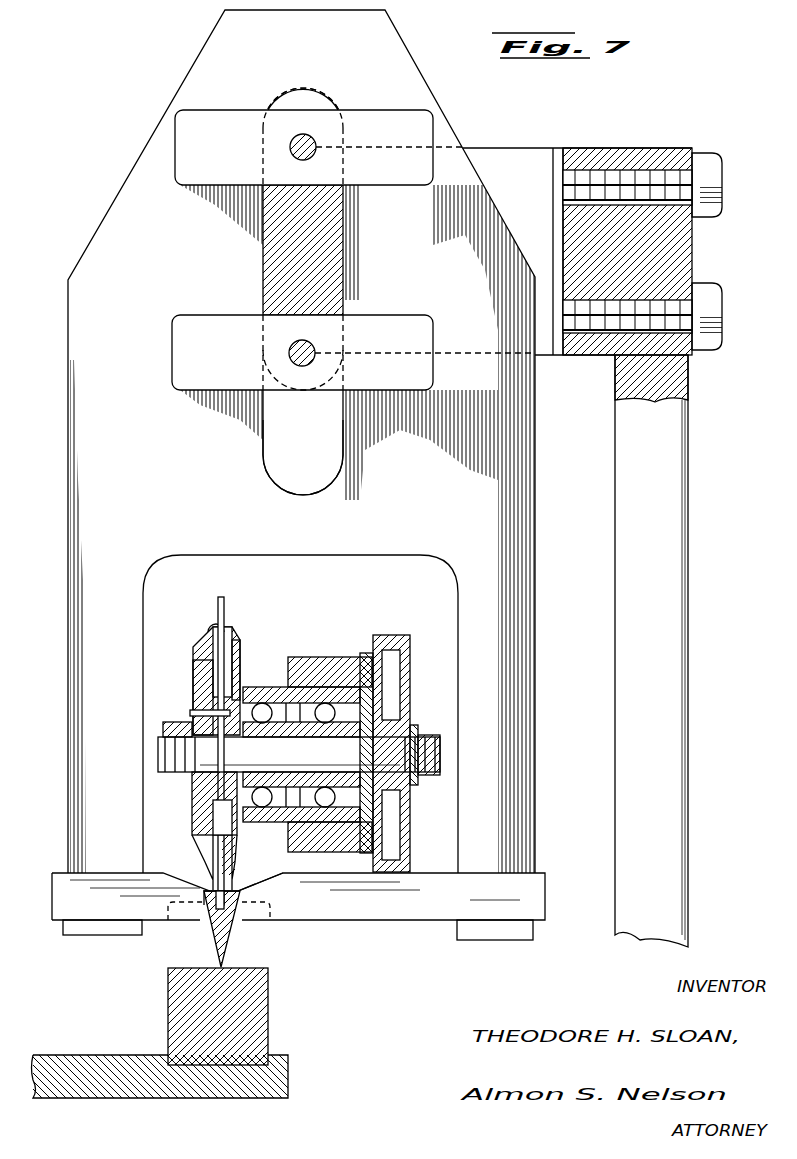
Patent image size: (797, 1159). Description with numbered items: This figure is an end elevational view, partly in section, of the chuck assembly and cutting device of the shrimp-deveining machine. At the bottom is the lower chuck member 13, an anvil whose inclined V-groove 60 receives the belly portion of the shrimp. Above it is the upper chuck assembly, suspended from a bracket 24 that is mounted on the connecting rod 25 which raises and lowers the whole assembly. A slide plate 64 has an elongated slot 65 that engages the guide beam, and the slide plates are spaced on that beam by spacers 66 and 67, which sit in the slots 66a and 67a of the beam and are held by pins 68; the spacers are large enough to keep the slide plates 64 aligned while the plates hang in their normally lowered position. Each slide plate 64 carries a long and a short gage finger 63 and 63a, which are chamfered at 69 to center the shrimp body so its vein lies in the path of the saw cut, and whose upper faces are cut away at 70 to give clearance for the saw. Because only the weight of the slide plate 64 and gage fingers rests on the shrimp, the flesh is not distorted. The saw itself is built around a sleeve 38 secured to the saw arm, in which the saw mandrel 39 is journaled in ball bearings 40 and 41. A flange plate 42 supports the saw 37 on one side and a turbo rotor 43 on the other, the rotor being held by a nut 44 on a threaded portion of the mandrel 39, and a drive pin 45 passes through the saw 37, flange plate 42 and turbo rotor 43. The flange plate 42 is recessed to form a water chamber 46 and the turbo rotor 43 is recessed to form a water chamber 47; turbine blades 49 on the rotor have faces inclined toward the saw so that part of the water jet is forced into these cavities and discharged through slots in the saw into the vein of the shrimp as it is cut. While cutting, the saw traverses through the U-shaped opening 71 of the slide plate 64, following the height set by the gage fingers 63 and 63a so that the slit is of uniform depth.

The lower chuck member 13 is at (268, 1005).
The bracket 24 is at (556, 148).
The connecting rod 25 is at (686, 474).
The saw 37 is at (226, 600).
The sleeve 38 is at (255, 690).
The saw mandrel 39 is at (299, 754).
The ball bearing 40 is at (268, 822).
The ball bearing 41 is at (305, 832).
The flange plate 42 is at (240, 660).
The turbo rotor 43 is at (195, 674).
The nut 44 is at (170, 724).
The drive pin 45 is at (192, 712).
The water chamber 46 is at (234, 642).
The water chamber 47 is at (210, 632).
The turbine blades 49 is at (196, 853).
The inclined V-groove 60 is at (226, 945).
The gage finger 63 is at (366, 924).
The gage finger 63a is at (158, 925).
The slide plate 64 is at (68, 460).
The elongated slot 65 is at (343, 452).
The spacer 66 is at (215, 318).
The slot 66a is at (338, 318).
The spacer 67 is at (180, 183).
The slot 67a is at (335, 185).
The pin 68 is at (316, 147).
The chamfer 69 is at (200, 912).
The cut-away 70 is at (246, 885).
The U-shaped opening 71 is at (460, 612).